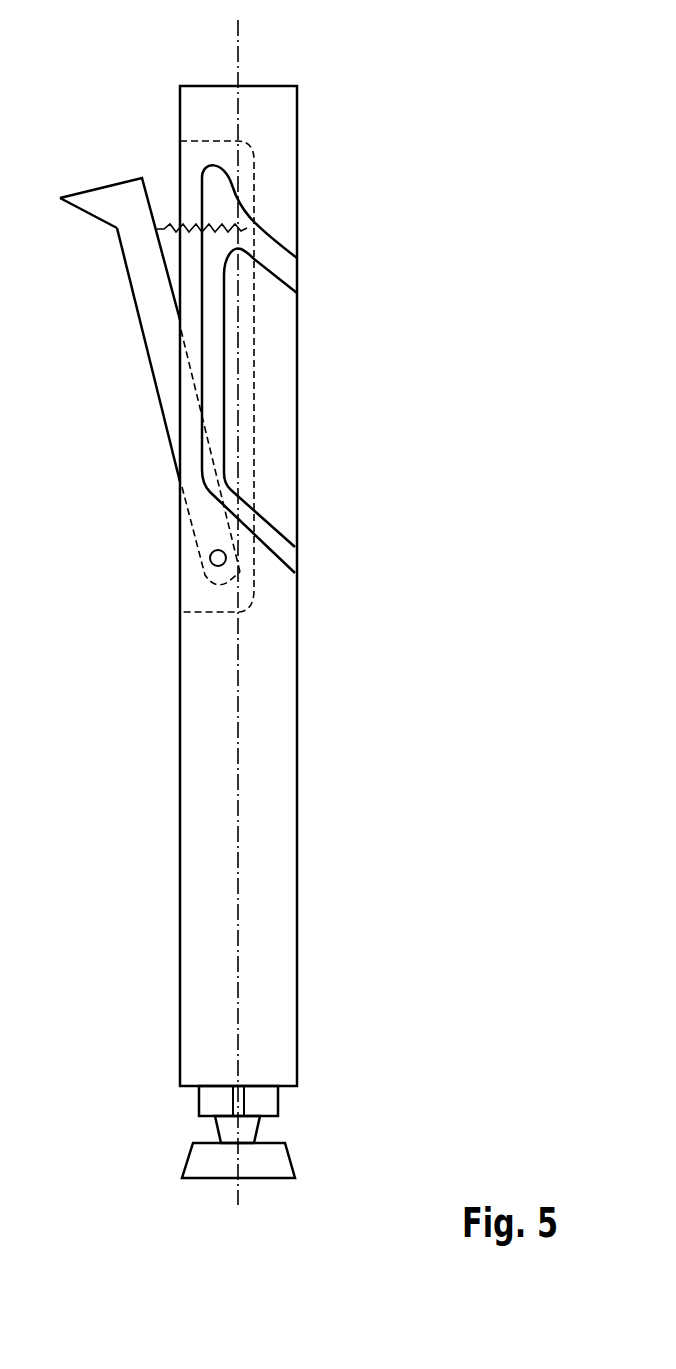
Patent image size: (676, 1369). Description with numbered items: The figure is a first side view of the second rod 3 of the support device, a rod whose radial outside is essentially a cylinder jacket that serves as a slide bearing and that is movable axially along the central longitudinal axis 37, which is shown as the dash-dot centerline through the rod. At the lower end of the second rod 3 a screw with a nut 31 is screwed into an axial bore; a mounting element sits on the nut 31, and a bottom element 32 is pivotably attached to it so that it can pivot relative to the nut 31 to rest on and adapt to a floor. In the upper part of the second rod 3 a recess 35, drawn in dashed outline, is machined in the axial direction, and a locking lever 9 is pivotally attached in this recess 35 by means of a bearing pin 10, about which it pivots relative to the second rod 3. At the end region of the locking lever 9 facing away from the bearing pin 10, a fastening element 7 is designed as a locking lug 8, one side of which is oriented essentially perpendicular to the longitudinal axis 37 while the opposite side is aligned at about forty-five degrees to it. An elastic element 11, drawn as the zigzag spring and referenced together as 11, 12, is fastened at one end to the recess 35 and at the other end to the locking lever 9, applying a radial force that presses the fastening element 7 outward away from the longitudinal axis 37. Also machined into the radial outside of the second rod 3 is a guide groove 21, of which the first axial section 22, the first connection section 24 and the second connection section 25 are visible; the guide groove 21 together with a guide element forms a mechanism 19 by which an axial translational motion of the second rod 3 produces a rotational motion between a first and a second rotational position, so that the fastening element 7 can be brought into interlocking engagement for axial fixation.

The second rod 3 is at (280, 815).
The fastening element 7 is at (150, 354).
The locking lug 8 is at (83, 203).
The locking lever 9 is at (152, 290).
The bearing pin 10 is at (210, 558).
The elastic element 11 is at (171, 161).
The spring element 12 is at (166, 227).
The mechanism 19 is at (317, 369).
The guide groove 21 is at (317, 369).
The first axial section 22 is at (215, 360).
The first connection section 24 is at (267, 252).
The second connection section 25 is at (265, 535).
The nut 31 is at (268, 1103).
The bottom element 32 is at (277, 1162).
The recess 35 is at (237, 141).
The longitudinal axis 37 is at (238, 32).